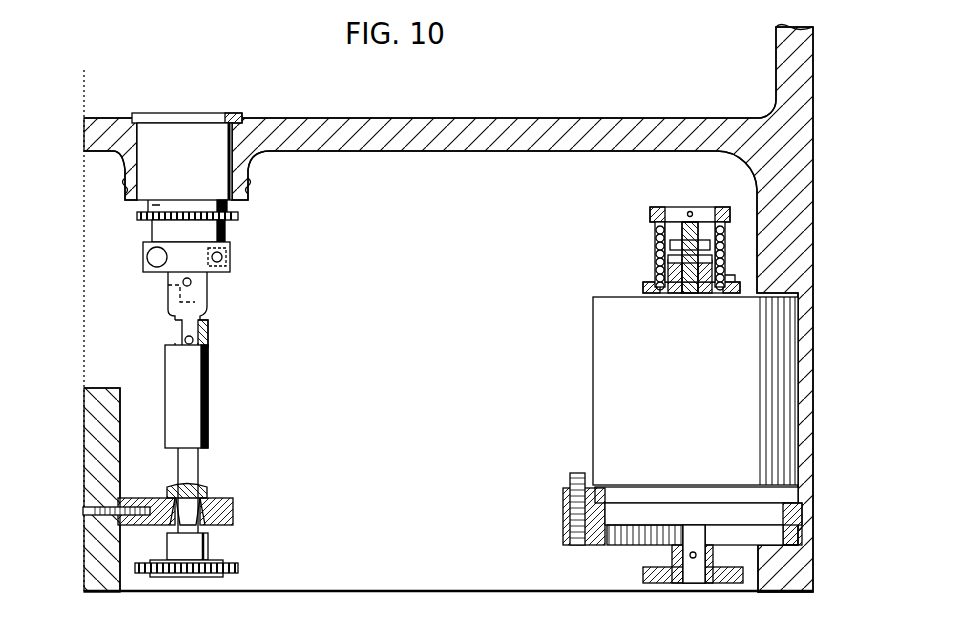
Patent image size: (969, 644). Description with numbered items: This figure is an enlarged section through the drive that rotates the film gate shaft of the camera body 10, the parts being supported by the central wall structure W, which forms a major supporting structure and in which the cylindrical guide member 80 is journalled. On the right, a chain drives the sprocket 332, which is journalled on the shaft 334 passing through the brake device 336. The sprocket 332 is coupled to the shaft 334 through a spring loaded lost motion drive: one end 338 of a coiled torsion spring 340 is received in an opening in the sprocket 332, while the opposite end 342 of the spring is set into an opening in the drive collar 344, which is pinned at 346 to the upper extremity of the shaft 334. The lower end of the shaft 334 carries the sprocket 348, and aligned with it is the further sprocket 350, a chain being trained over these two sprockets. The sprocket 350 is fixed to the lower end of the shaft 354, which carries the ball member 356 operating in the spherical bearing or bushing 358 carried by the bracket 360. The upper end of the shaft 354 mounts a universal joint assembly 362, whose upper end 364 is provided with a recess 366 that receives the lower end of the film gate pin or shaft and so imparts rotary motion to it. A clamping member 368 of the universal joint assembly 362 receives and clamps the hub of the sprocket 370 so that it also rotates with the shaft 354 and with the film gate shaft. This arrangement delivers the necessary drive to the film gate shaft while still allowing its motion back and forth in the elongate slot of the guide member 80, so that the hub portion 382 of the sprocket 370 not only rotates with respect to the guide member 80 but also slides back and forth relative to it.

The camera body 10 is at (822, 104).
The central wall structure W is at (503, 118).
The cylindrical guide member 80 is at (188, 135).
The hub portion 382 is at (158, 205).
The sprocket 370 is at (240, 215).
The clamping member 368 is at (230, 248).
The recess 366 is at (168, 297).
The upper end of the universal joint 364 is at (197, 290).
The universal joint assembly 362 is at (212, 342).
The shaft 354 is at (185, 470).
The ball member 356 is at (207, 495).
The spherical bearing or bushing 358 is at (233, 512).
The bracket 360 is at (140, 497).
The sprocket 350 is at (207, 575).
The sprocket 332 is at (655, 278).
The shaft 334 is at (690, 297).
The brake device 336 is at (613, 360).
The end of torsion spring 338 is at (728, 278).
The torsion spring 340 is at (728, 225).
The opposite end of torsion spring 342 is at (652, 213).
The drive collar 344 is at (665, 208).
The pin 346 is at (703, 208).
The sprocket 348 is at (670, 583).